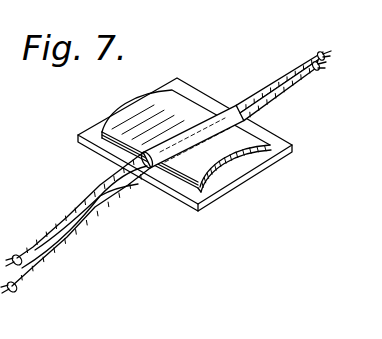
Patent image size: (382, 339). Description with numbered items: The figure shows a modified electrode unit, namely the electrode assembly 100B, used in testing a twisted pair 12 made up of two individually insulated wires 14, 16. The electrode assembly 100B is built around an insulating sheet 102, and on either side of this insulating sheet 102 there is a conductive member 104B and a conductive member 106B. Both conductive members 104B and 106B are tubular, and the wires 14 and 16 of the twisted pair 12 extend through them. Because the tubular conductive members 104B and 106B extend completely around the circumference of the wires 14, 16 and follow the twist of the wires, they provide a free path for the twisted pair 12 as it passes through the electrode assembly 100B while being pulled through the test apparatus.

The twisted pair 12 is at (279, 51).
The individually insulated wire 14 is at (116, 169).
The individually insulated wire 16 is at (134, 198).
The electrode assembly 100B is at (110, 100).
The insulating sheet 102 is at (248, 166).
The conductive member 104B is at (236, 136).
The conductive member 106B is at (164, 188).